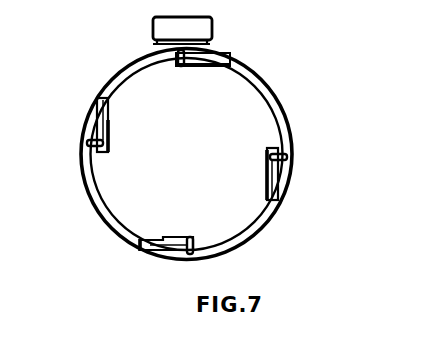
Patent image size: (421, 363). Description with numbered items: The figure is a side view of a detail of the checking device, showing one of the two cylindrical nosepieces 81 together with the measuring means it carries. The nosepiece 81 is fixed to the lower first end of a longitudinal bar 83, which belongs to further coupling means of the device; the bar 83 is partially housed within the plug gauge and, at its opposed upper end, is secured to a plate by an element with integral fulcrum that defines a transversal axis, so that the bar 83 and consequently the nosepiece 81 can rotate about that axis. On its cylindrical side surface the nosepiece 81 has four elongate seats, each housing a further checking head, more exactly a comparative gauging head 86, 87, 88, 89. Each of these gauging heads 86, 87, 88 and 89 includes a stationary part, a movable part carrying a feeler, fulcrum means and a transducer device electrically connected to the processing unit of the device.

The cylindrical nosepiece 81 is at (276, 229).
The longitudinal bar 83 is at (172, 28).
The comparative gauging head 86 is at (278, 150).
The comparative gauging head 87 is at (140, 242).
The comparative gauging head 88 is at (97, 104).
The comparative gauging head 89 is at (276, 31).